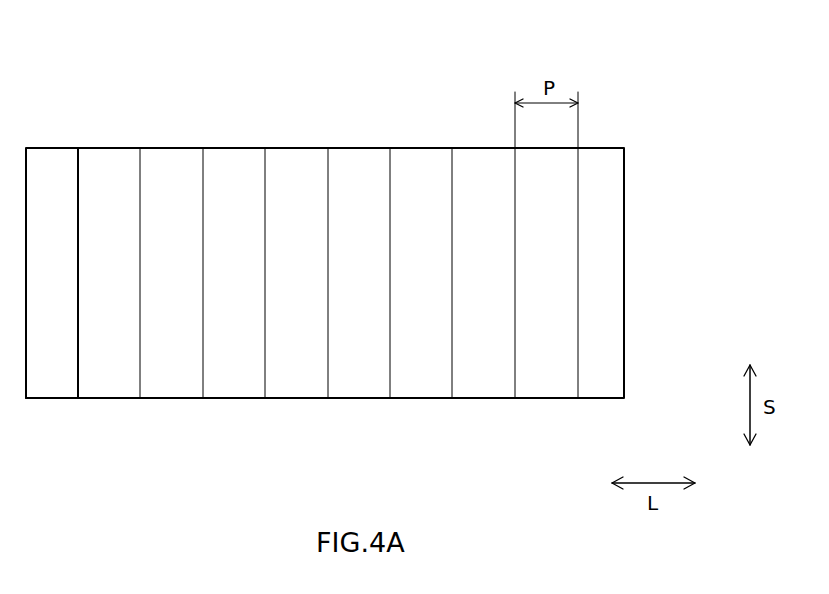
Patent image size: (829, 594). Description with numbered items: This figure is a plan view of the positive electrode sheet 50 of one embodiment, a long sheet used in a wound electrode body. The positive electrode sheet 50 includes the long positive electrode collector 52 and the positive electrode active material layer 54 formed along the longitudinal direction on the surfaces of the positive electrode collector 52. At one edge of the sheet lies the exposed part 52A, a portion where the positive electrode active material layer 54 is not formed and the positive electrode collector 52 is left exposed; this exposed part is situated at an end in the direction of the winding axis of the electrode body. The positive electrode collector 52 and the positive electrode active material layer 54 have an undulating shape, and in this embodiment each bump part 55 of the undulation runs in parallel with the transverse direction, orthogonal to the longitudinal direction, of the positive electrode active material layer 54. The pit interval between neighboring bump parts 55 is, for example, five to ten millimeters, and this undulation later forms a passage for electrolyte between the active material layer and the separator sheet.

The positive electrode sheet 50 is at (631, 100).
The positive electrode collector 52 is at (46, 145).
The exposed part 52A is at (51, 386).
The positive electrode active material layer 54 is at (240, 153).
The bump part 55 is at (140, 363).